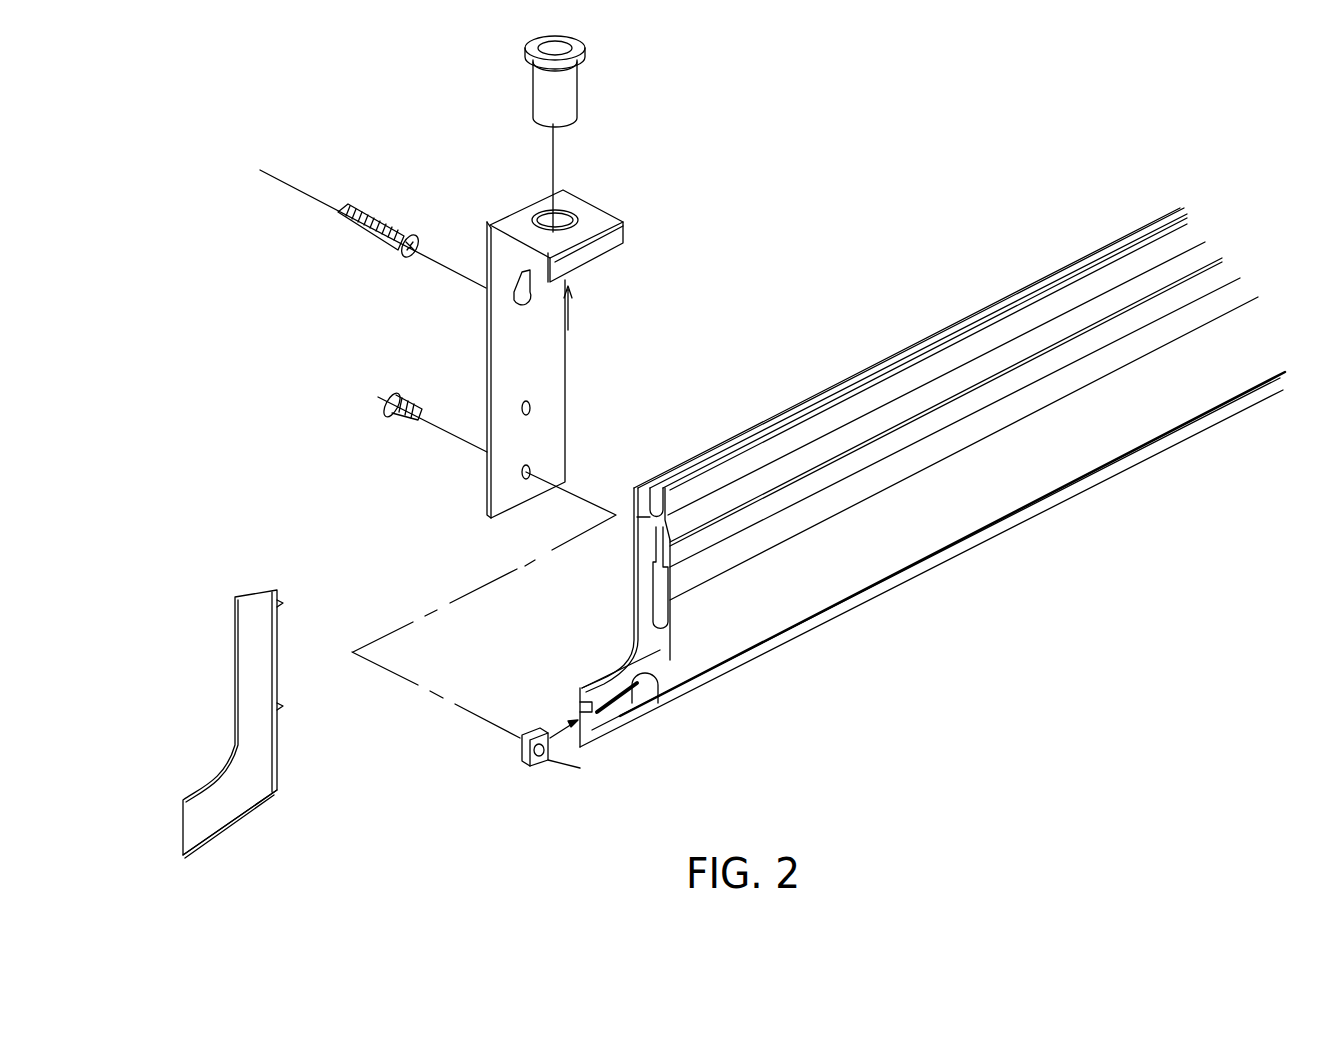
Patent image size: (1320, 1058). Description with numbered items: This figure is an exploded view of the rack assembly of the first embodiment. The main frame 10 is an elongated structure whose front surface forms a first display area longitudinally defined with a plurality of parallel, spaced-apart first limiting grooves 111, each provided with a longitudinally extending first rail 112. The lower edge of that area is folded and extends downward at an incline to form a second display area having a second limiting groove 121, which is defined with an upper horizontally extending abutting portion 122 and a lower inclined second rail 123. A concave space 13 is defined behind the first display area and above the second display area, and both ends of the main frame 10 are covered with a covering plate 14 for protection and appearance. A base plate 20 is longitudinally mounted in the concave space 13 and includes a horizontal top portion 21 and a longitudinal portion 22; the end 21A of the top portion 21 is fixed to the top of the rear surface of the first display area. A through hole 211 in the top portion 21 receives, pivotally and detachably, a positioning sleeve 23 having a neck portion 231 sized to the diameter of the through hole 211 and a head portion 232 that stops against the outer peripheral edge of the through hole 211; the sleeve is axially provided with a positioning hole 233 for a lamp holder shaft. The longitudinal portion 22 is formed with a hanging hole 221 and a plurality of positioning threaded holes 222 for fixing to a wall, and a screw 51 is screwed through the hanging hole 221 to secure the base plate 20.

The main frame 10 is at (818, 512).
The concave space 13 is at (632, 640).
The covering plate 14 is at (388, 412).
The base plate 20 is at (338, 339).
The top portion 21 is at (592, 212).
The end of the top portion 21A is at (588, 255).
The longitudinal portion 22 is at (511, 389).
The positioning sleeve 23 is at (576, 134).
The screw 51 is at (365, 230).
The first limiting groove 111 is at (835, 442).
The first rail 112 is at (782, 448).
The second limiting groove 121 is at (645, 688).
The abutting portion 122 is at (648, 690).
The second rail 123 is at (648, 692).
The through hole 211 is at (548, 222).
The hanging hole 221 is at (527, 300).
The positioning threaded hole 222 is at (523, 480).
The neck portion 231 is at (570, 100).
The head portion 232 is at (578, 58).
The positioning hole 233 is at (560, 45).